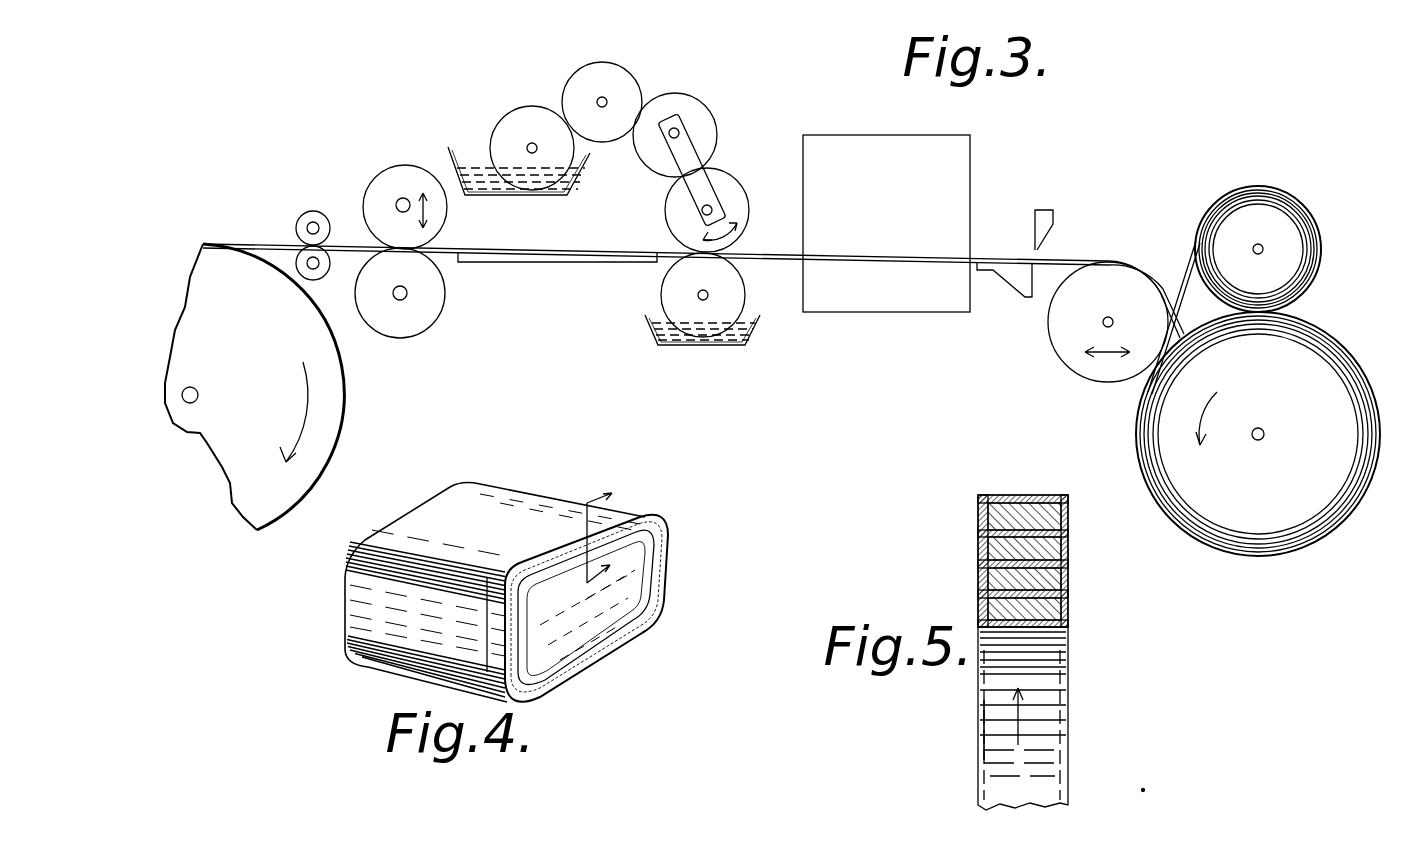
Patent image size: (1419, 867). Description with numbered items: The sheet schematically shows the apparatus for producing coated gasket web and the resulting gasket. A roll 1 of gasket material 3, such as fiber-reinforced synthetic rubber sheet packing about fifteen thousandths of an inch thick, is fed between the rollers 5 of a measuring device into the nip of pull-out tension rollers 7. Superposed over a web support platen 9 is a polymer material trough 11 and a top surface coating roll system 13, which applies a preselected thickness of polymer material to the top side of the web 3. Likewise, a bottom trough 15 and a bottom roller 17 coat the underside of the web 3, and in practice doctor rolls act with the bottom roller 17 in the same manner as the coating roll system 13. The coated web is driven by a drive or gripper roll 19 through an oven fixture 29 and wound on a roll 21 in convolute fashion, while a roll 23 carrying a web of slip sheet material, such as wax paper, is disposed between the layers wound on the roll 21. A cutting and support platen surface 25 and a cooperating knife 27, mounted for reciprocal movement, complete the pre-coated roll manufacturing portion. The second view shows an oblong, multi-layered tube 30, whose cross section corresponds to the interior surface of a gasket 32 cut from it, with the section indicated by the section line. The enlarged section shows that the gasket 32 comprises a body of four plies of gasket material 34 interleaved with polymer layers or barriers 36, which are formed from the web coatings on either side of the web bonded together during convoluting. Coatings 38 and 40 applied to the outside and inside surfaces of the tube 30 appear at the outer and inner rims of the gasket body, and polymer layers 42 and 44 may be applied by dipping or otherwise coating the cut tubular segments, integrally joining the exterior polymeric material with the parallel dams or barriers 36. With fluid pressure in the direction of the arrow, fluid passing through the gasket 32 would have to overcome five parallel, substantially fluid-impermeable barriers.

In FIG. 3, the roll of gasket material 1 is at (330, 433).
In FIG. 3, the gasket material web 3 is at (250, 243).
In FIG. 3, the measuring device rollers 5 is at (313, 211).
In FIG. 4, the measuring device rollers 5 is at (581, 551).
In FIG. 3, the pull-out tension rollers 7 is at (443, 297).
In FIG. 3, the web support platen 9 is at (540, 263).
In FIG. 3, the polymer material trough 11 is at (572, 195).
In FIG. 3, the top surface coating roll system 13 is at (731, 132).
In FIG. 3, the bottom trough 15 is at (748, 340).
In FIG. 3, the bottom roller 17 is at (678, 283).
In FIG. 3, the drive or gripper roll 19 is at (1077, 343).
In FIG. 3, the winding roll 21 is at (1305, 378).
In FIG. 3, the slip sheet roll 23 is at (1260, 212).
In FIG. 3, the cutting and support platen surface 25 is at (1010, 277).
In FIG. 3, the knife 27 is at (1055, 222).
In FIG. 3, the oven fixture 29 is at (940, 180).
In FIG. 4, the multi-layered tube 30 is at (528, 492).
In FIG. 4, the gasket 32 is at (598, 660).
In FIG. 5, the gasket 32 is at (1079, 695).
In FIG. 5, the gasket material plies 34 is at (1061, 606).
In FIG. 5, the polymer layers or barriers 36 is at (978, 568).
In FIG. 4, the outside coating 38 is at (622, 512).
In FIG. 5, the outside coating 38 is at (1018, 495).
In FIG. 4, the inside coating 40 is at (622, 625).
In FIG. 5, the inside coating 40 is at (1013, 627).
In FIG. 5, the polymer coating layer 42 is at (1063, 670).
In FIG. 5, the polymer coating layer 44 is at (978, 720).